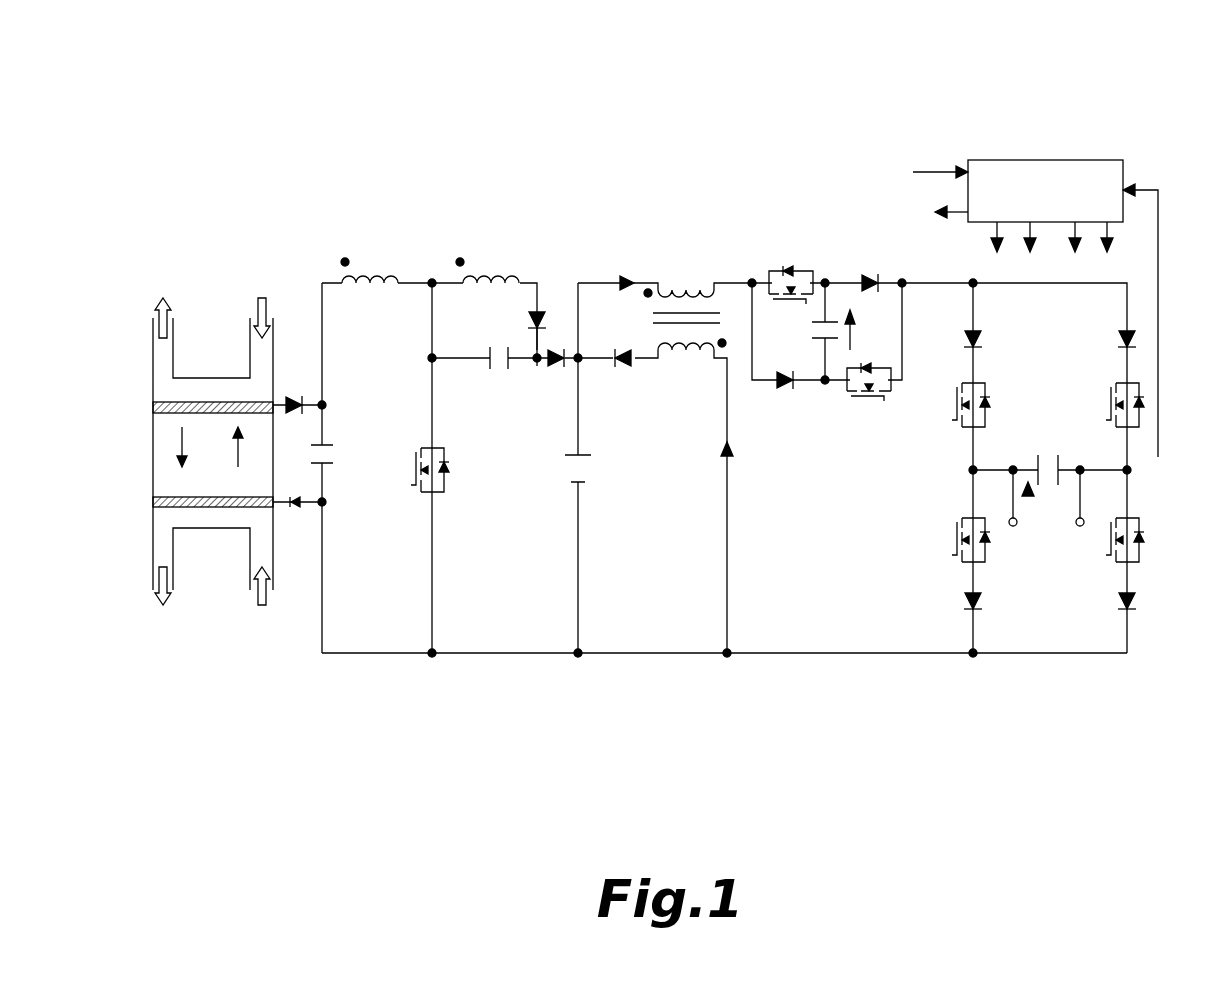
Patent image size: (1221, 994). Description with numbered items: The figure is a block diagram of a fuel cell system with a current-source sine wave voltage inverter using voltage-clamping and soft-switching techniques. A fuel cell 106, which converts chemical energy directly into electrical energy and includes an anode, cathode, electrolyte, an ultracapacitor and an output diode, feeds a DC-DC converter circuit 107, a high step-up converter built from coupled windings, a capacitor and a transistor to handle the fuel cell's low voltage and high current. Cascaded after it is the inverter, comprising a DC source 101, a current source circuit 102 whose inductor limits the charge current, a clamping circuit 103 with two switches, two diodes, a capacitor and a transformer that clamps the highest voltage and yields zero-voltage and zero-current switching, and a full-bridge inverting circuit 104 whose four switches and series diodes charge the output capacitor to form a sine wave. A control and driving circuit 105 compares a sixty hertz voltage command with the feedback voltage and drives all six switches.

The DC source 101 is at (563, 732).
The current source circuit 102 is at (662, 130).
The clamping circuit 103 is at (765, 732).
The inverting circuit 104 is at (1092, 732).
The control and driving circuit 105 is at (958, 130).
The fuel cell 106 is at (235, 732).
The DC-DC converter circuit 107 is at (452, 732).